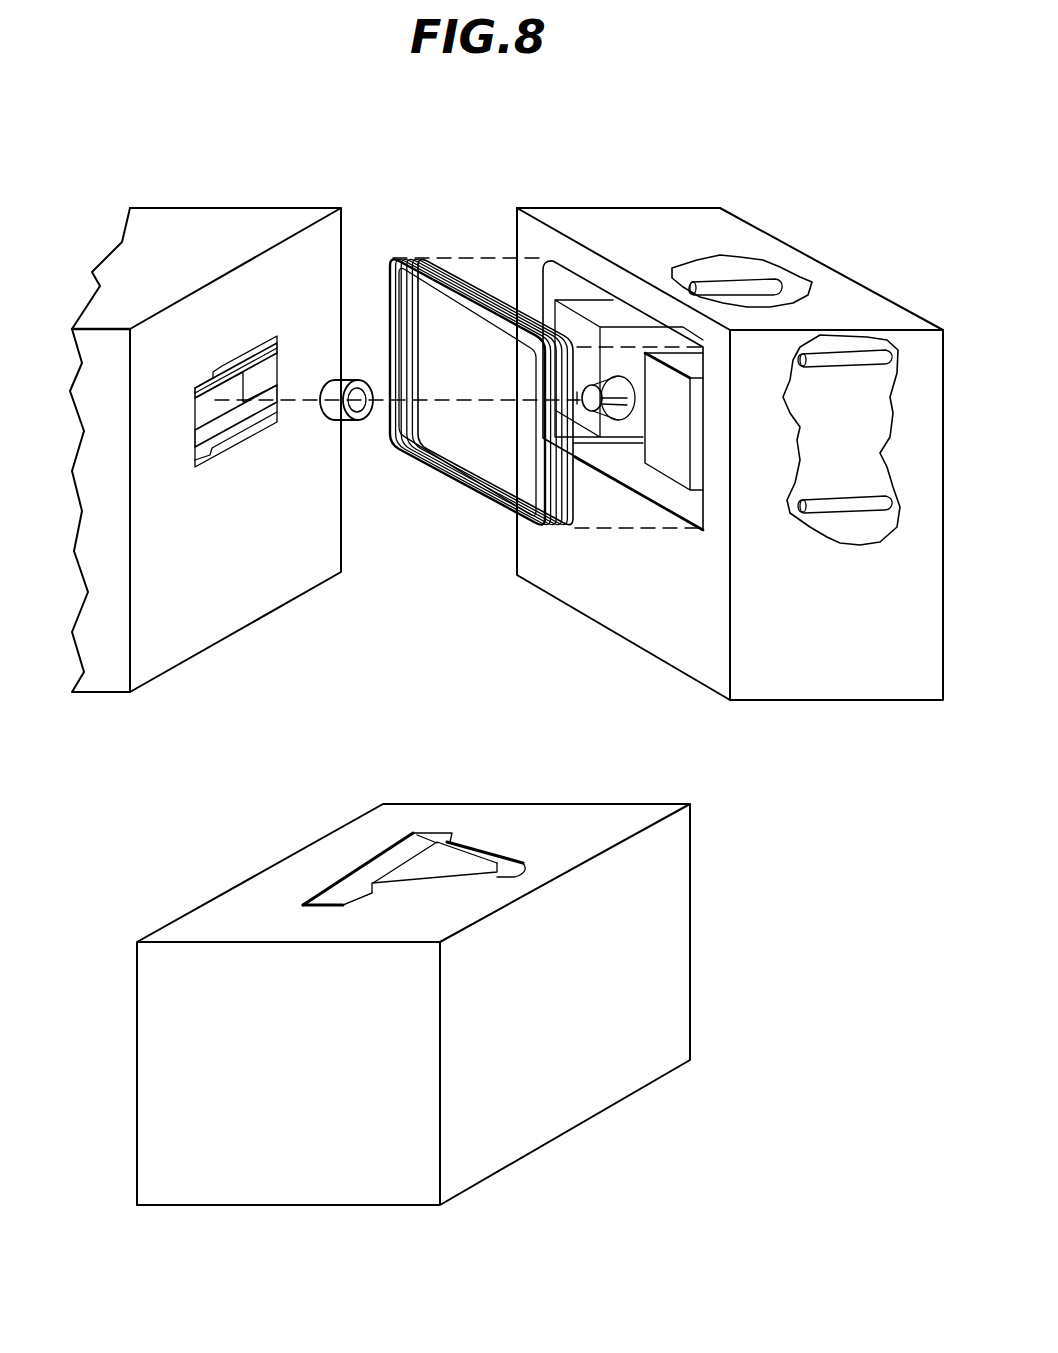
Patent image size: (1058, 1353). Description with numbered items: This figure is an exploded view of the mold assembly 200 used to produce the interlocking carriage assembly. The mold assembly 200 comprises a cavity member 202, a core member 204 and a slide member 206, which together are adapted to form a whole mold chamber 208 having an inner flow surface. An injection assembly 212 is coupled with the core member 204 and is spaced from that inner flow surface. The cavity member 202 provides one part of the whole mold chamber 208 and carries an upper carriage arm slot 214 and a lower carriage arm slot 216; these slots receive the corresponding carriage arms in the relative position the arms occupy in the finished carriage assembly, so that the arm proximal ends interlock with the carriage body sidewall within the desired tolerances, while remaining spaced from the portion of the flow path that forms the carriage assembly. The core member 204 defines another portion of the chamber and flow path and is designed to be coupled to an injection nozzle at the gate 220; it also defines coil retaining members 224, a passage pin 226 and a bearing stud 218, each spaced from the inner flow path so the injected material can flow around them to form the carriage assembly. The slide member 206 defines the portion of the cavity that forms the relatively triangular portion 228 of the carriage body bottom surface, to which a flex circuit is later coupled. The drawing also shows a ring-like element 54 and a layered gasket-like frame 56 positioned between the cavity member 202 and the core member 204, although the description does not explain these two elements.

The mold assembly 200 is at (456, 183).
The cavity member 202 is at (207, 640).
The core member 204 is at (683, 670).
The slide member 206 is at (620, 1078).
The whole mold chamber 208 is at (397, 857).
The injection assembly 212 is at (275, 430).
The upper carriage arm slot 214 is at (243, 349).
The lower carriage arm slot 216 is at (235, 445).
The bearing stud 218 is at (580, 398).
The gate 220 is at (733, 283).
The coil retaining member 224 is at (577, 327).
The passage pin 226 is at (633, 380).
The relatively triangular portion 228 is at (437, 860).
The bushing ring 54 is at (333, 377).
The gasket 56 is at (477, 490).